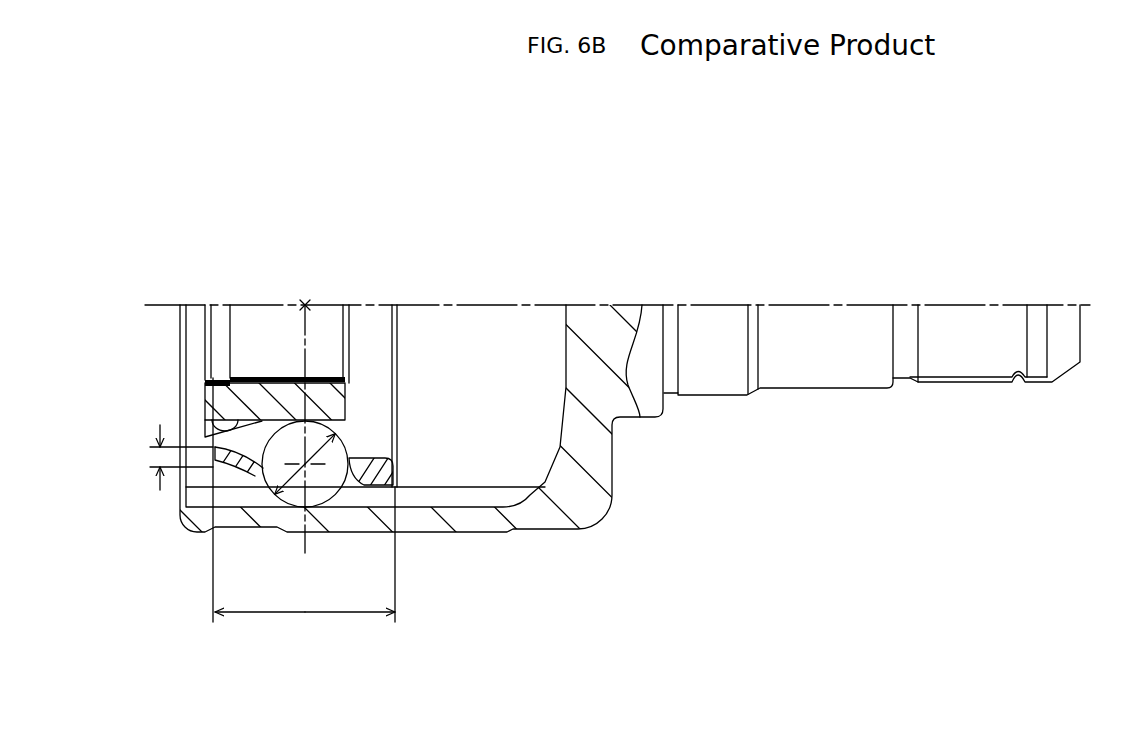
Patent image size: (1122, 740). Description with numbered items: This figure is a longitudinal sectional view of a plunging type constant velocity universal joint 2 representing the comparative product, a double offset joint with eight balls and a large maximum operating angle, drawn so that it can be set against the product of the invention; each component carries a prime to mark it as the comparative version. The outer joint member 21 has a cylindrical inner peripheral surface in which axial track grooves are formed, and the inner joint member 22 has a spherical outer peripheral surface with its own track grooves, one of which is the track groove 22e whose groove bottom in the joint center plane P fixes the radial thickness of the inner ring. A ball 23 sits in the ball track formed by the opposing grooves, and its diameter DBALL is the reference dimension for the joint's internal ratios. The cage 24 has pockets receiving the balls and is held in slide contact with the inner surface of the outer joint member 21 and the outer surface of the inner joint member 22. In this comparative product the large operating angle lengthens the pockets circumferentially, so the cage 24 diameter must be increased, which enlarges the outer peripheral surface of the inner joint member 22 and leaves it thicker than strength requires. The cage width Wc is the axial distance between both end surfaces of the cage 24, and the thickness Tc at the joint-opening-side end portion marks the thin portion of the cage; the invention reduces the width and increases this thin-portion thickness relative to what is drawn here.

The plunging type constant velocity universal joint 2 is at (683, 534).
The outer joint member 21 is at (541, 533).
The inner joint member 22 is at (333, 403).
The track groove 22e is at (207, 420).
The ball 23 is at (331, 488).
The cage 24 is at (241, 478).
The ball diameter DBALL is at (338, 440).
The joint center plane P is at (306, 553).
The cage thickness at joint-opening-side end portion Tc is at (158, 455).
The cage width Wc is at (302, 614).